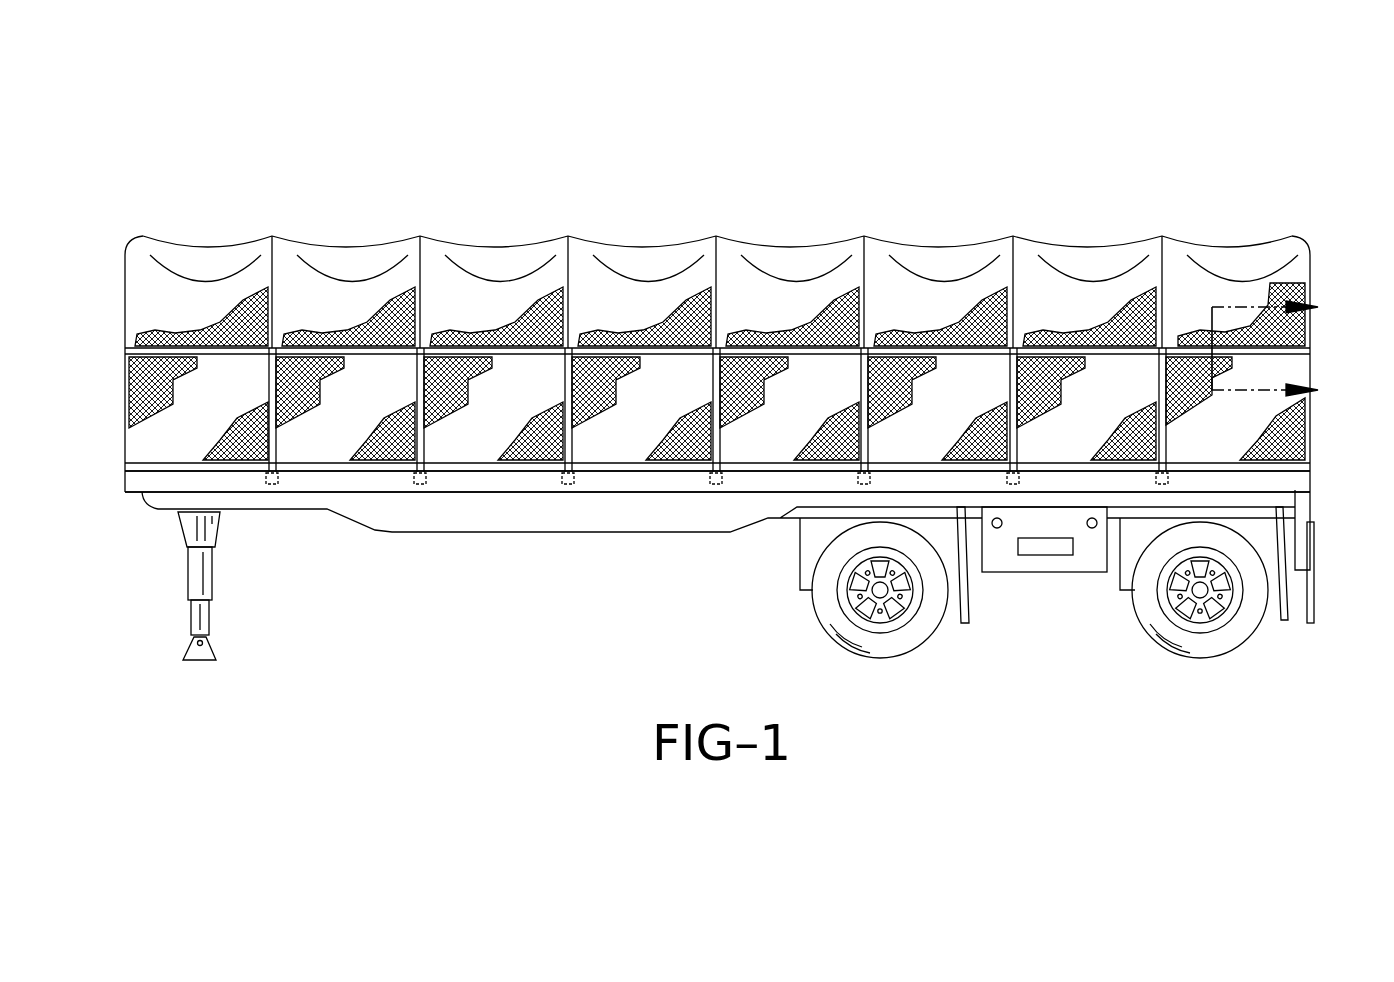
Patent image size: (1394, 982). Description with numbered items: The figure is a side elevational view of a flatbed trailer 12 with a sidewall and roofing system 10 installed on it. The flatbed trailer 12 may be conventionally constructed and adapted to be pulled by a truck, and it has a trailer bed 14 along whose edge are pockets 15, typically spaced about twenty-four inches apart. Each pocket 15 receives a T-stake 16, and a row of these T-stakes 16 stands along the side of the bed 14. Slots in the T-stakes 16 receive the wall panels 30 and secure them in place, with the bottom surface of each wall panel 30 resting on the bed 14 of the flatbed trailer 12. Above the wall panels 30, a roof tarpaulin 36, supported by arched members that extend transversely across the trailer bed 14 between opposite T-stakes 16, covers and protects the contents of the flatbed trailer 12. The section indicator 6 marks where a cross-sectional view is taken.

The sidewall and roofing system 10 is at (78, 214).
The flatbed trailer 12 is at (538, 545).
The trailer bed 14 is at (132, 482).
The pocket 15 is at (275, 484).
The T-stake 16 is at (268, 385).
The wall panel 30 is at (191, 441).
The roof tarpaulin 36 is at (625, 258).
The section line 6 is at (1279, 351).